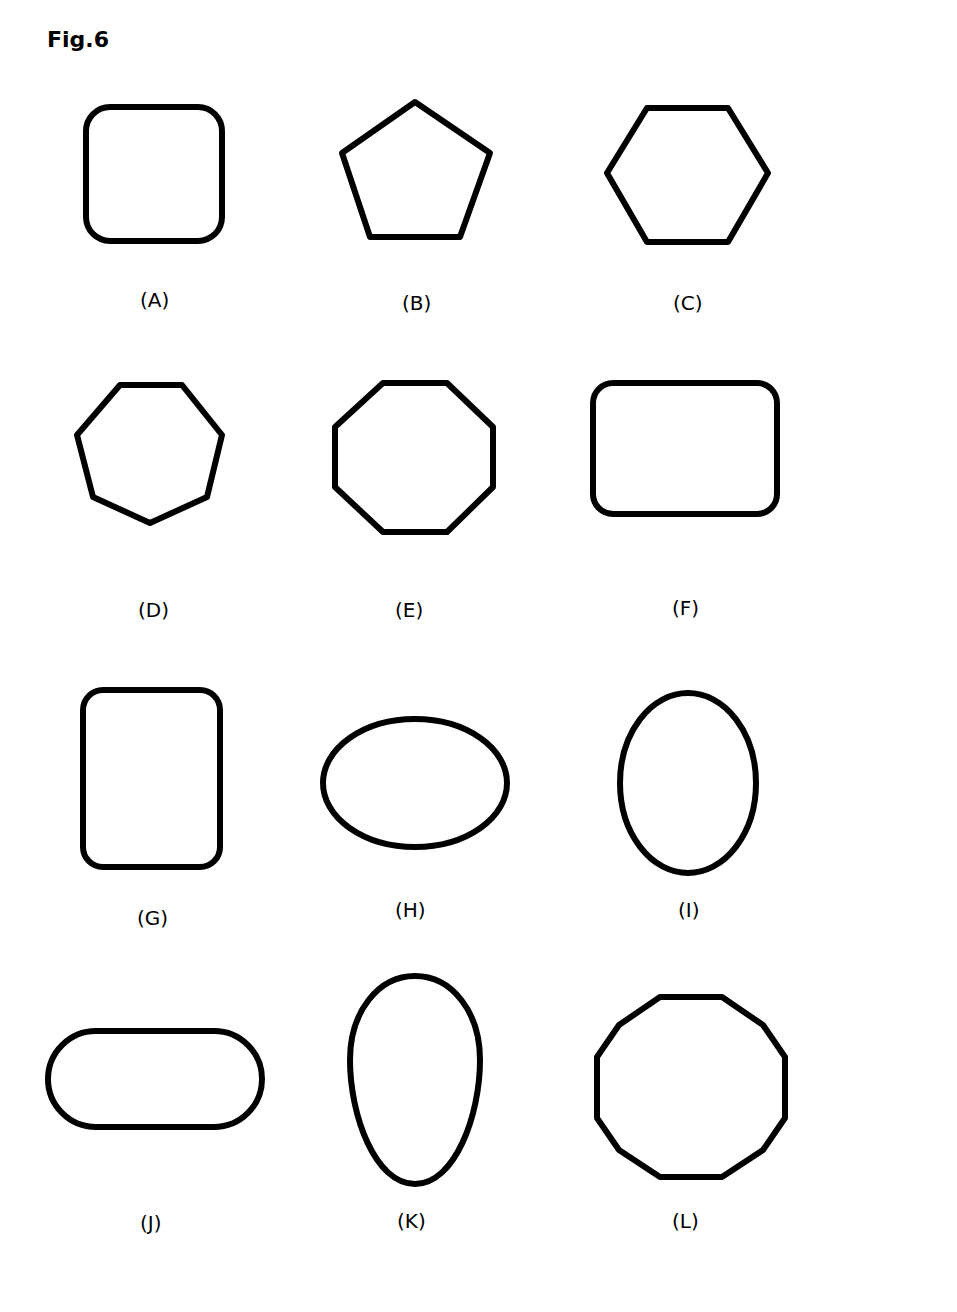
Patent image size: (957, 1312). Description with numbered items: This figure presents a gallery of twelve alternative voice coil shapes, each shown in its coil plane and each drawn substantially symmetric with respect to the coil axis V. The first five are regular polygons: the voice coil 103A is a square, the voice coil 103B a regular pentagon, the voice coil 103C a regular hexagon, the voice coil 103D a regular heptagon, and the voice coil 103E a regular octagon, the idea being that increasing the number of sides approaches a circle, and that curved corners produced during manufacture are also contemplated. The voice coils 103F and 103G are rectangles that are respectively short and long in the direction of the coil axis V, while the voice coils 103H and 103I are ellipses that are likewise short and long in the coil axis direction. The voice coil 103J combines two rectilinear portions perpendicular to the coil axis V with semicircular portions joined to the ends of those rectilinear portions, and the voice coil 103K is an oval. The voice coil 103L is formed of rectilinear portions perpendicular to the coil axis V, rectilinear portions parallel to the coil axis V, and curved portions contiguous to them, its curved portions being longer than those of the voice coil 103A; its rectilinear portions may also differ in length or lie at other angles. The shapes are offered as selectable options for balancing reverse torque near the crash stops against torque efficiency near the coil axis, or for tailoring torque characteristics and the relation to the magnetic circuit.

The coil axis V is at (155, 270).
The voice coil 103A is at (222, 117).
The voice coil 103B is at (458, 128).
The voice coil 103C is at (742, 130).
The voice coil 103D is at (202, 402).
The voice coil 103E is at (470, 402).
The voice coil 103F is at (777, 397).
The voice coil 103G is at (222, 717).
The voice coil 103H is at (468, 728).
The voice coil 103I is at (742, 727).
The voice coil 103J is at (227, 1032).
The voice coil 103K is at (472, 1008).
The voice coil 103L is at (757, 1018).